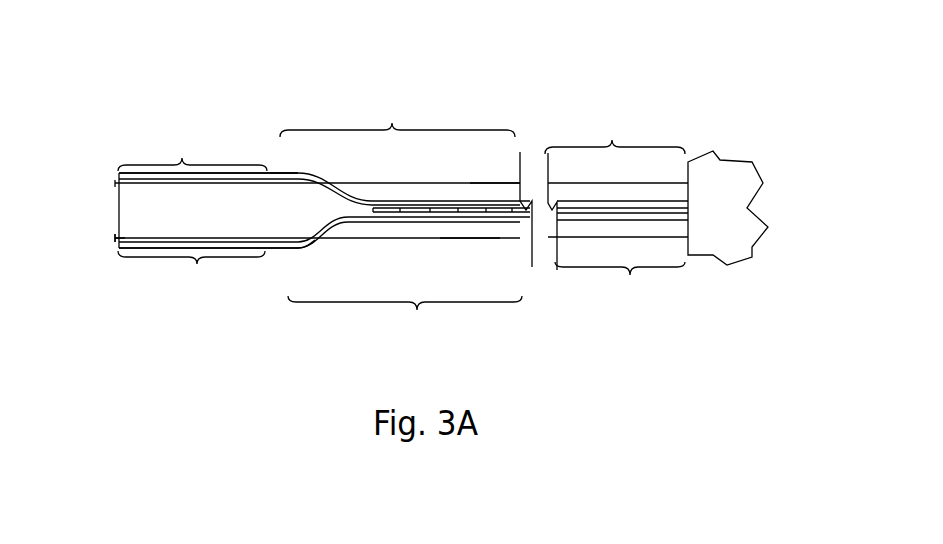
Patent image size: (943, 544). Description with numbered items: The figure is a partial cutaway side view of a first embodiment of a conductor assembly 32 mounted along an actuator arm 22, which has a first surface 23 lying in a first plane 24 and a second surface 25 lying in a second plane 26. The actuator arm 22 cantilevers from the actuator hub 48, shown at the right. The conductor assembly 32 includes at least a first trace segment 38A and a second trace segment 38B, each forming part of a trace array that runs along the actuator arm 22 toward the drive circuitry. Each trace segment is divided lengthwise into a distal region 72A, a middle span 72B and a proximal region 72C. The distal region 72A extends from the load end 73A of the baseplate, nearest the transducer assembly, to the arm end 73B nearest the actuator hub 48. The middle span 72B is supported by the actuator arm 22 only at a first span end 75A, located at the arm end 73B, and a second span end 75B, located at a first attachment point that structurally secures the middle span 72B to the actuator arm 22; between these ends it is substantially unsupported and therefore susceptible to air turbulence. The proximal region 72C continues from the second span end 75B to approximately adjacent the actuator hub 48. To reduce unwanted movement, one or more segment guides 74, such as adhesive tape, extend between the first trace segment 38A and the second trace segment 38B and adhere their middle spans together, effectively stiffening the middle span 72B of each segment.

The actuator arm 22 is at (128, 212).
The first surface 23 is at (440, 183).
The first plane 24 is at (489, 183).
The second surface 25 is at (472, 240).
The second plane 26 is at (498, 239).
The conductor assembly 32 is at (284, 166).
The first trace segment 38A is at (307, 178).
The second trace segment 38B is at (346, 228).
The actuator hub 48 is at (732, 175).
The distal region 72A is at (192, 218).
The middle span 72B is at (401, 220).
The proximal region 72C is at (614, 139).
The load end 73A is at (115, 241).
The arm end 73B is at (270, 247).
The segment guide 74 is at (462, 214).
The first span end 75A is at (273, 172).
The second span end 75B is at (524, 245).